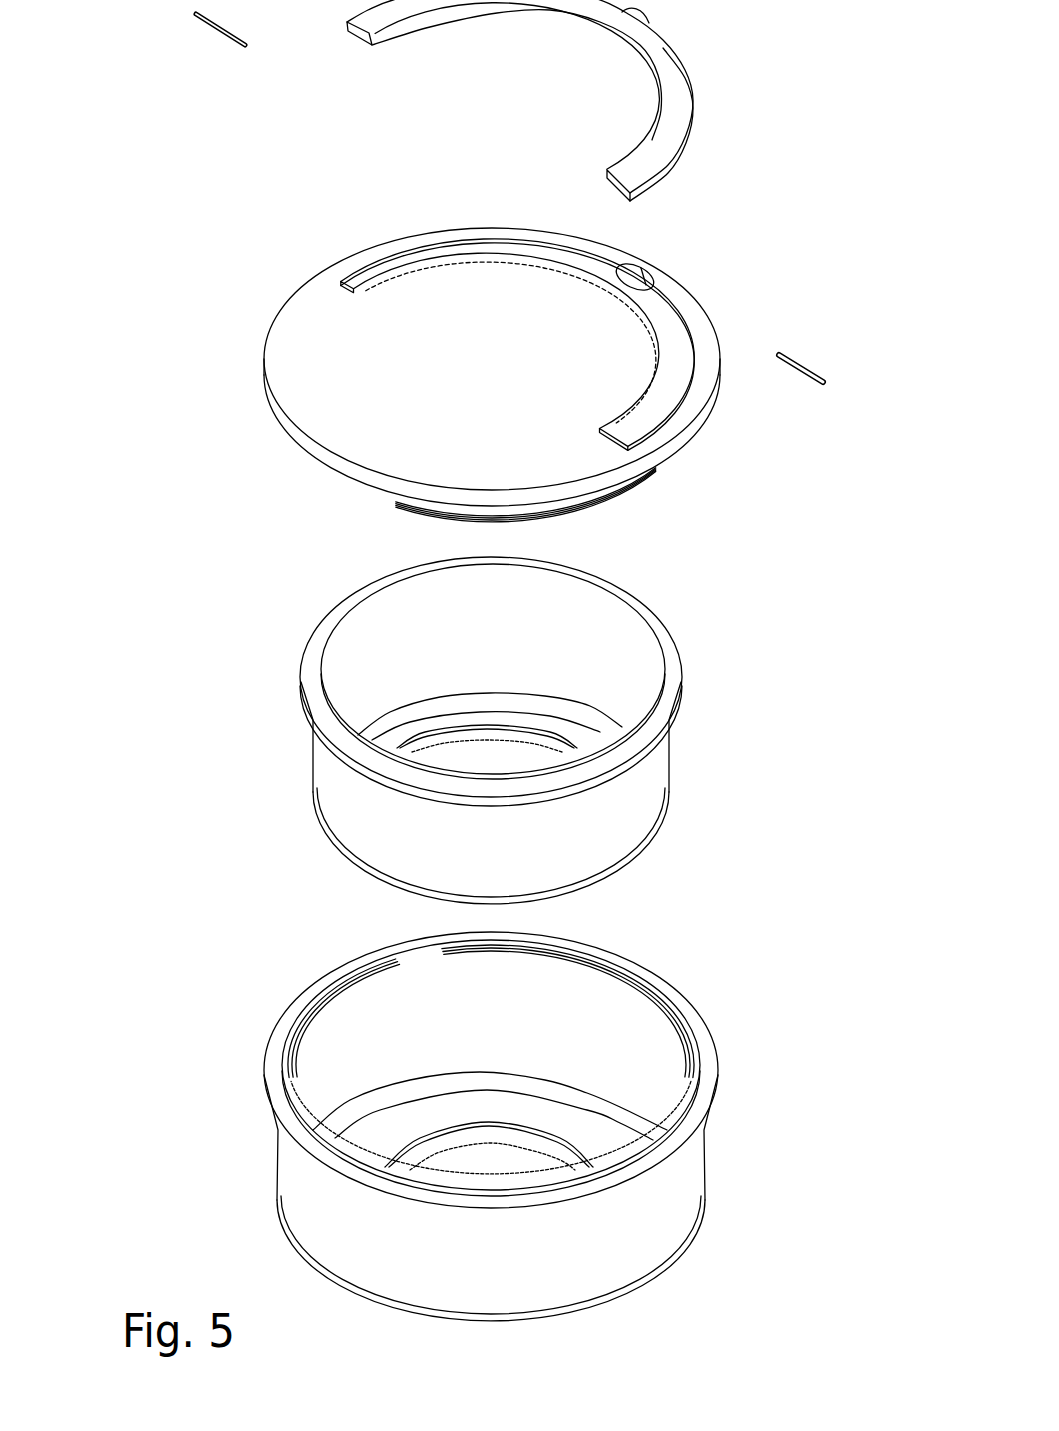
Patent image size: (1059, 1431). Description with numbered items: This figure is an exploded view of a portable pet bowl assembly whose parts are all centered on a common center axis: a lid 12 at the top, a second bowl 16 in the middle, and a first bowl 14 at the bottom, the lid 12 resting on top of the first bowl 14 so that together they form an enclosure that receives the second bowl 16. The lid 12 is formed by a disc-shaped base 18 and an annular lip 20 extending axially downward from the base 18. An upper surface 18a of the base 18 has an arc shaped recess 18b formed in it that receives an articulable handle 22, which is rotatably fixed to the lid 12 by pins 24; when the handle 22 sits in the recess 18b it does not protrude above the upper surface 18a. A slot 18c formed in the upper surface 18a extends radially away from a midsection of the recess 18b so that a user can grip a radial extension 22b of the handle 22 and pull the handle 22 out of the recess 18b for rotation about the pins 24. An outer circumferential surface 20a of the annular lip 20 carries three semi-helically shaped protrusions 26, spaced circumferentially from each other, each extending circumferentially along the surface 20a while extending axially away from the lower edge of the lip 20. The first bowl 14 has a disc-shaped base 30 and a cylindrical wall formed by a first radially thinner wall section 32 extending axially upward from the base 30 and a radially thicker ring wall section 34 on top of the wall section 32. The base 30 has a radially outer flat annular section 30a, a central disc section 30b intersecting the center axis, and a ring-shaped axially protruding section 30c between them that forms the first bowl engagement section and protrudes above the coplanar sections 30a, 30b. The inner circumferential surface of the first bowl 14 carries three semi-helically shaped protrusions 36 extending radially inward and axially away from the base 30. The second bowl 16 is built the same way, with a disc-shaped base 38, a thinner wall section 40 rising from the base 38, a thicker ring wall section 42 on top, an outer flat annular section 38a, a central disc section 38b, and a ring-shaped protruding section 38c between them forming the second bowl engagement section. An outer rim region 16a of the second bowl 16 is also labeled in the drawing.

The lid 12 is at (150, 326).
The first bowl 14 is at (469, 1121).
The second bowl 16 is at (441, 730).
The upper cup rim 16a is at (673, 663).
The base 18 is at (470, 380).
The upper surface 18a is at (305, 316).
The arc shaped recess 18b is at (670, 328).
The slot 18c is at (624, 262).
The annular lip 20 is at (368, 499).
The outer circumferential surface 20a is at (383, 500).
The articulable handle 22 is at (590, 100).
The radial extension 22b is at (641, 18).
The pins 24 is at (810, 351).
The protrusion 26 is at (565, 512).
The base 30 is at (490, 1084).
The radially outer flat annular section 30a is at (390, 1125).
The central disc section 30b is at (450, 1130).
The axially protruding section 30c is at (528, 1160).
The first radially thinner wall section 32 is at (720, 1166).
The ring wall section 34 is at (733, 1060).
The protrusion 36 is at (640, 998).
The base 38 is at (490, 676).
The radially outer flat annular section 38a is at (400, 740).
The central disc section 38b is at (506, 756).
The axially protruding section 38c is at (476, 736).
The first radially thinner wall section 40 is at (653, 771).
The ring wall section 42 is at (670, 710).